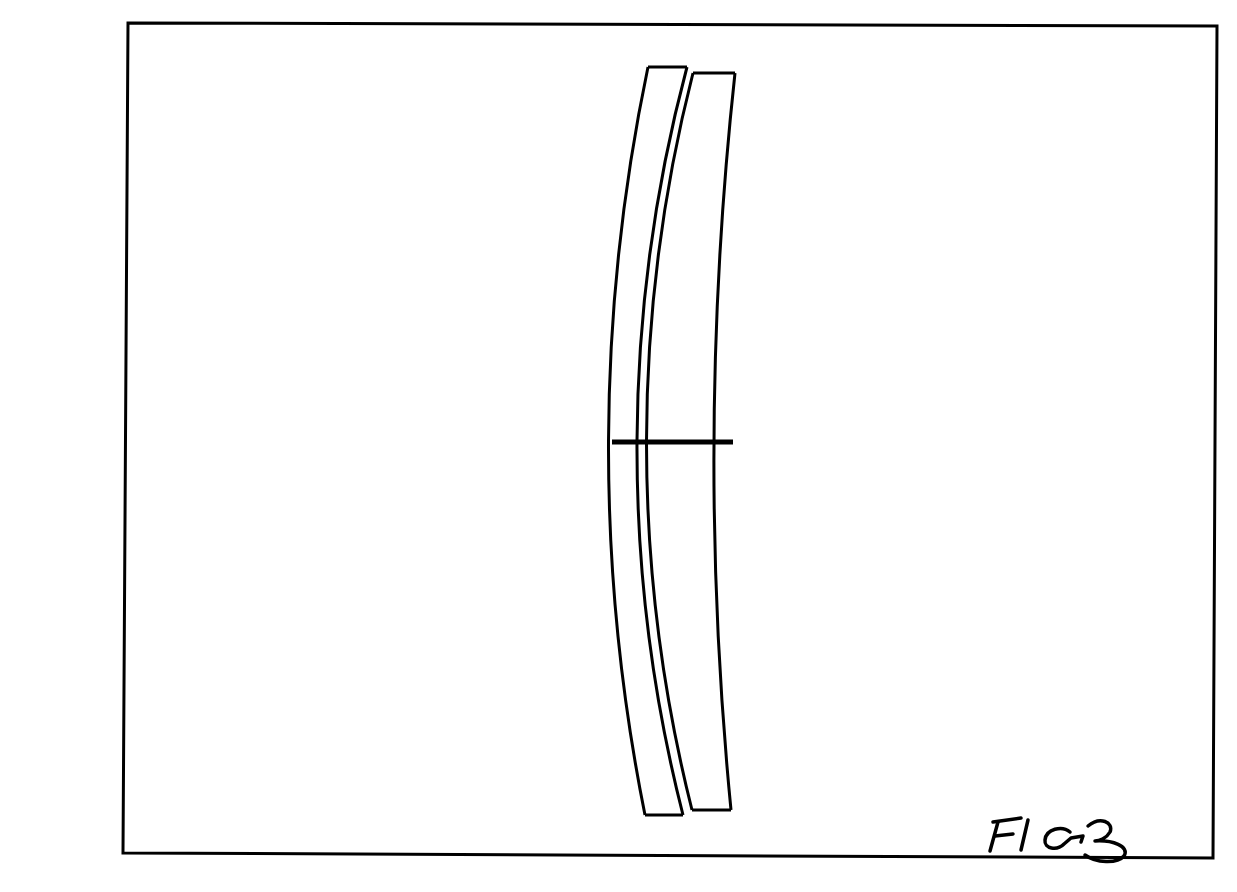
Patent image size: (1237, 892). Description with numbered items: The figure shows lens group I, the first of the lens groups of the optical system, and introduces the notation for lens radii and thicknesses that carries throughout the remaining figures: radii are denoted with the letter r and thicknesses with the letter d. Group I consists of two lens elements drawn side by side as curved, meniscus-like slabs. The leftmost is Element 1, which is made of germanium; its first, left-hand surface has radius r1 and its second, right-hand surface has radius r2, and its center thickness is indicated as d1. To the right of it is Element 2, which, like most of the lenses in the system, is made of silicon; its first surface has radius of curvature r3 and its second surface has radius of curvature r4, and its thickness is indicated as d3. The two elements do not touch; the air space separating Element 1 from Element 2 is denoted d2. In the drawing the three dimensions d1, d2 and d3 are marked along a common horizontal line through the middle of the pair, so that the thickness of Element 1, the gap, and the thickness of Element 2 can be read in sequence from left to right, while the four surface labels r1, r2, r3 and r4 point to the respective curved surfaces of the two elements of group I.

The group I is at (670, 440).
The lens element 1 Element 1 is at (526, 441).
The lens element 2 Element 2 is at (824, 441).
The first radius of element 1 r1 is at (613, 195).
The second radius of element 1 r2 is at (638, 264).
The first radius of element 2 r3 is at (660, 306).
The second radius of element 2 r4 is at (728, 330).
The thickness of element 1 d1 is at (611, 460).
The air space between elements d2 is at (650, 454).
The thickness of element 2 d3 is at (723, 458).